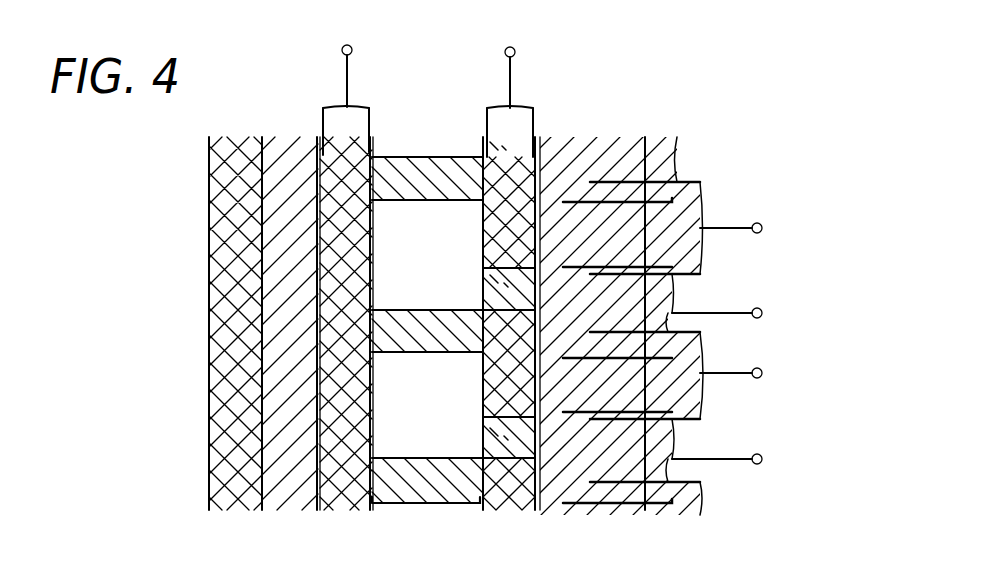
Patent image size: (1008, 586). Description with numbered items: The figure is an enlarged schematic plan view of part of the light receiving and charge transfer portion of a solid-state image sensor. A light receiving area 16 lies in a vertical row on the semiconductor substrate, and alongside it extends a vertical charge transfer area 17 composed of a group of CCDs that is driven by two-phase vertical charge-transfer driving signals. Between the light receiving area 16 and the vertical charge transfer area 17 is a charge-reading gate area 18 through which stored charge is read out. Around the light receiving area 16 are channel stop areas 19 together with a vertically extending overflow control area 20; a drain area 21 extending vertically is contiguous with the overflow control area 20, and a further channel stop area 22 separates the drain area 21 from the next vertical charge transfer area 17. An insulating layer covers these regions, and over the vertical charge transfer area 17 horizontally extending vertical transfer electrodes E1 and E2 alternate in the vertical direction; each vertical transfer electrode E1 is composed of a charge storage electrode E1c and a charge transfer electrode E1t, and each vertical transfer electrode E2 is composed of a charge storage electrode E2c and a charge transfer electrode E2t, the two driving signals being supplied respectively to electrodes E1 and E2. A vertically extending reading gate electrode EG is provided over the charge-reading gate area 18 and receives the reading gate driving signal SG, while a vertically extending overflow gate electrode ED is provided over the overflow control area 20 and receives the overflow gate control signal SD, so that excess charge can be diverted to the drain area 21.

The light receiving area 16 is at (400, 222).
The vertical charge transfer area 17 is at (627, 513).
The charge-reading gate area 18 is at (482, 143).
The channel stop area 19 is at (437, 190).
The overflow control area 20 is at (347, 497).
The drain area 21 is at (288, 495).
The channel stop area 22 is at (237, 497).
The overflow gate electrode ED is at (361, 120).
The overflow gate control signal SD is at (348, 59).
The reading gate electrode EG is at (522, 120).
The reading gate driving signal SG is at (513, 60).
The vertical transfer electrode E1 is at (692, 247).
The charge transfer electrode E1t is at (688, 246).
The charge storage electrode E1c is at (657, 293).
The vertical transfer electrode E2 is at (692, 395).
The charge transfer electrode E2t is at (684, 392).
The charge storage electrode E2c is at (663, 445).